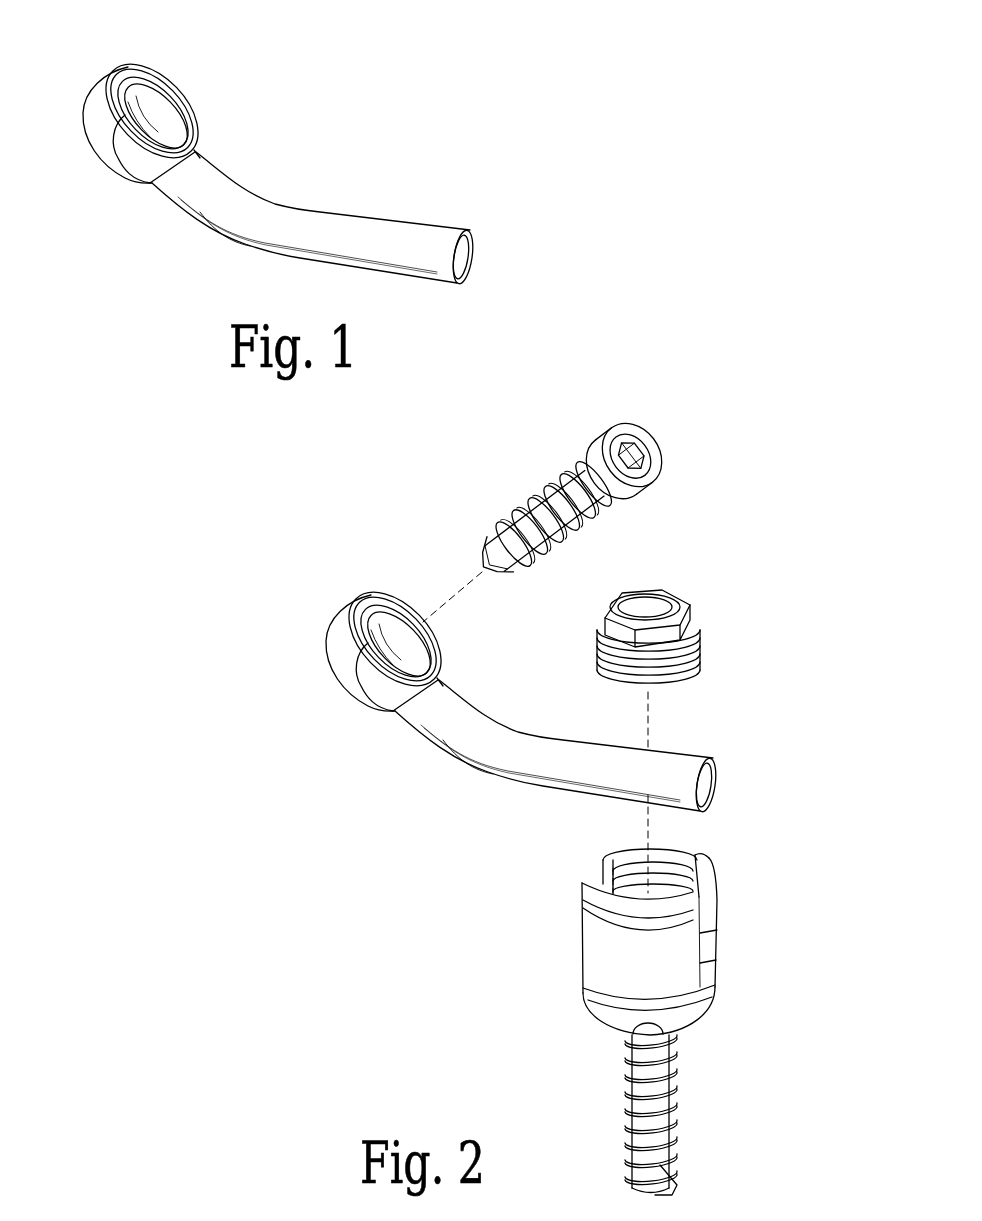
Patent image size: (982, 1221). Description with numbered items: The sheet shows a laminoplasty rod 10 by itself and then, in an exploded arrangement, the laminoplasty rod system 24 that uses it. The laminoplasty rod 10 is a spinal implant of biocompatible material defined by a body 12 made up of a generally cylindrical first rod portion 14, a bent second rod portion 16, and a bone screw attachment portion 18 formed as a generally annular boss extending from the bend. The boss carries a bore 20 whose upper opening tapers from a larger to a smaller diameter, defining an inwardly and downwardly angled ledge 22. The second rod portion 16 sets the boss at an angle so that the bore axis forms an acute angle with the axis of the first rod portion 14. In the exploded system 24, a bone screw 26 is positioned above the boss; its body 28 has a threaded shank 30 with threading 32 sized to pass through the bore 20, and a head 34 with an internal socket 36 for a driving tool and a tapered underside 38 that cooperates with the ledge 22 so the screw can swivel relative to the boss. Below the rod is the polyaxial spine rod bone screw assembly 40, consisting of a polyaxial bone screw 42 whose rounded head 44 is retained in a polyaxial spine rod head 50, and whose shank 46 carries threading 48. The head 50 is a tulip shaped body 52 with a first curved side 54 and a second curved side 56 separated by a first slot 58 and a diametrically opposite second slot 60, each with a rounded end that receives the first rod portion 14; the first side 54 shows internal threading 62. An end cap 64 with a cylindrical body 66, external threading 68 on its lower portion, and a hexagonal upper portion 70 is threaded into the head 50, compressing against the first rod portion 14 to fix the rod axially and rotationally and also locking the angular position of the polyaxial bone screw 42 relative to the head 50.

In FIG. 1, the laminoplasty rod 10 is at (333, 110).
In FIG. 2, the laminoplasty rod 10 is at (275, 623).
In FIG. 1, the body 12 is at (345, 210).
In FIG. 2, the body 12 is at (557, 734).
In FIG. 1, the first rod portion 14 is at (414, 260).
In FIG. 2, the first rod portion 14 is at (694, 761).
In FIG. 1, the second rod portion 16 is at (203, 204).
In FIG. 2, the second rod portion 16 is at (451, 768).
In FIG. 1, the bone screw attachment portion 18 is at (118, 95).
In FIG. 2, the bone screw attachment portion 18 is at (372, 636).
In FIG. 1, the bore 20 is at (100, 152).
In FIG. 2, the bore 20 is at (372, 639).
In FIG. 1, the ledge 22 is at (165, 112).
In FIG. 2, the ledge 22 is at (396, 632).
In FIG. 2, the laminoplasty rod system 24 is at (770, 440).
In FIG. 2, the bone screw 26 is at (596, 418).
In FIG. 2, the body 28 is at (638, 492).
In FIG. 2, the shank 30 is at (540, 508).
In FIG. 2, the threading 32 is at (538, 560).
In FIG. 2, the head 34 is at (670, 462).
In FIG. 2, the socket 36 is at (645, 448).
In FIG. 2, the underside 38 is at (600, 447).
In FIG. 2, the spine rod bone screw assembly 40 is at (780, 905).
In FIG. 2, the polyaxial bone screw 42 is at (680, 1066).
In FIG. 2, the rounded head 44 is at (632, 1030).
In FIG. 2, the shank 46 is at (632, 1108).
In FIG. 2, the threading 48 is at (678, 1126).
In FIG. 2, the polyaxial spine rod head 50 is at (583, 930).
In FIG. 2, the tulip shaped body 52 is at (713, 1011).
In FIG. 2, the first curved side 54 is at (717, 888).
In FIG. 2, the second curved side 56 is at (583, 962).
In FIG. 2, the first slot 58 is at (712, 945).
In FIG. 2, the second slot 60 is at (604, 870).
In FIG. 2, the threading 62 is at (692, 860).
In FIG. 2, the end cap 64 is at (748, 600).
In FIG. 2, the cylindrical body 66 is at (692, 610).
In FIG. 2, the threading 68 is at (703, 655).
In FIG. 2, the hexagonal upper portion 70 is at (605, 620).